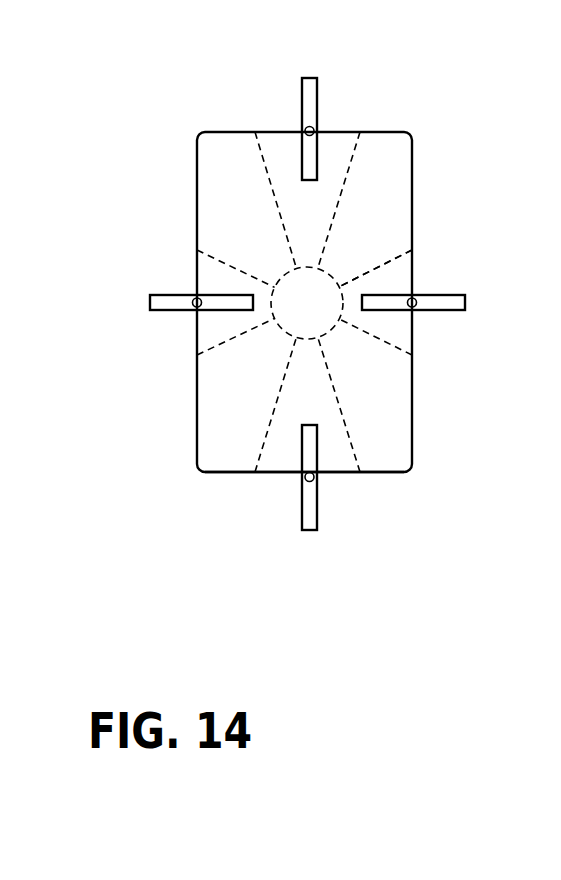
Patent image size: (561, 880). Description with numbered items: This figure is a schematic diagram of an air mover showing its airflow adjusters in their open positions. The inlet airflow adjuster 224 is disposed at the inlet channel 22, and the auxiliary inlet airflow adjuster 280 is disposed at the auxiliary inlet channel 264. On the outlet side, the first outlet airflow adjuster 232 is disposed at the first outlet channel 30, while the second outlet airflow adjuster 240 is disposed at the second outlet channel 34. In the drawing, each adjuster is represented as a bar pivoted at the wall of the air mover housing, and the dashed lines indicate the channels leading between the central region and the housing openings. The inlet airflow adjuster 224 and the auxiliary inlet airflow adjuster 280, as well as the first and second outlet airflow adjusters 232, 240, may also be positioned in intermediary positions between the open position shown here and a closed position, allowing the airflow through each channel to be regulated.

The first outlet channel 30 is at (345, 130).
The inlet channel 22 is at (197, 267).
The second outlet channel 34 is at (412, 262).
The first outlet airflow adjuster 232 is at (317, 100).
The inlet airflow adjuster 224 is at (172, 312).
The second outlet airflow adjuster 240 is at (438, 293).
The auxiliary inlet airflow adjuster 280 is at (310, 515).
The auxiliary inlet channel 264 is at (278, 475).